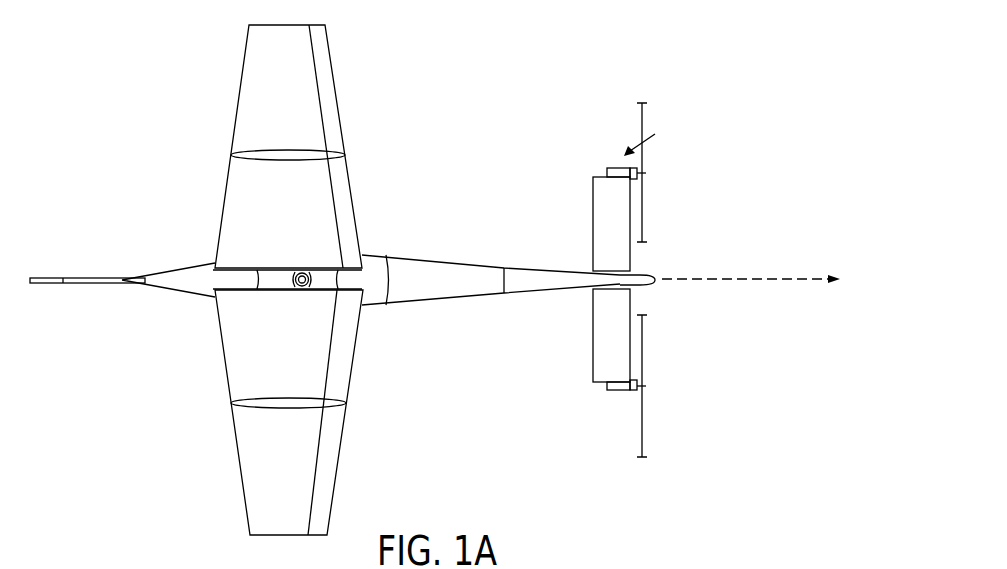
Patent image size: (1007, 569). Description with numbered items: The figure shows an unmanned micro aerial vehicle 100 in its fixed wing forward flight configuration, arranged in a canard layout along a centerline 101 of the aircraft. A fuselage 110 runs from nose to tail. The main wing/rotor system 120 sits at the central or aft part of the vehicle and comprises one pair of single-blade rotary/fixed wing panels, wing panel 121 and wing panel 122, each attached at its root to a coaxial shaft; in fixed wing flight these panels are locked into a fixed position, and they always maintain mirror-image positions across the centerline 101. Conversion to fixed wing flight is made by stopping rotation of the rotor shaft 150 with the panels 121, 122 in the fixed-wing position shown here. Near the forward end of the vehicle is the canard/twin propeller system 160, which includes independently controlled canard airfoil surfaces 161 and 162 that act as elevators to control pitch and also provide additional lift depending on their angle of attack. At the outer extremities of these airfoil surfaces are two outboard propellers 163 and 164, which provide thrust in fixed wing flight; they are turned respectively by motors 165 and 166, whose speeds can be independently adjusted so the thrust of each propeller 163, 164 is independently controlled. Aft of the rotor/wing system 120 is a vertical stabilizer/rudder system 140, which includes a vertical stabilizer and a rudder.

The unmanned micro aerial vehicle 100 is at (128, 104).
The centerline 101 is at (747, 277).
The fuselage 110 is at (442, 292).
The wing/rotor system 120 is at (298, 280).
The wing panel 121 is at (245, 98).
The wing panel 122 is at (245, 462).
The vertical stabilizer/rudder system 140 is at (72, 261).
The rotor shaft 150 is at (301, 273).
The canard/twin propeller system 160 is at (621, 259).
The canard airfoil surface 161 is at (598, 227).
The canard airfoil surface 162 is at (598, 332).
The propeller 163 is at (643, 121).
The propeller 164 is at (643, 438).
The motor 165 is at (618, 170).
The motor 166 is at (617, 391).